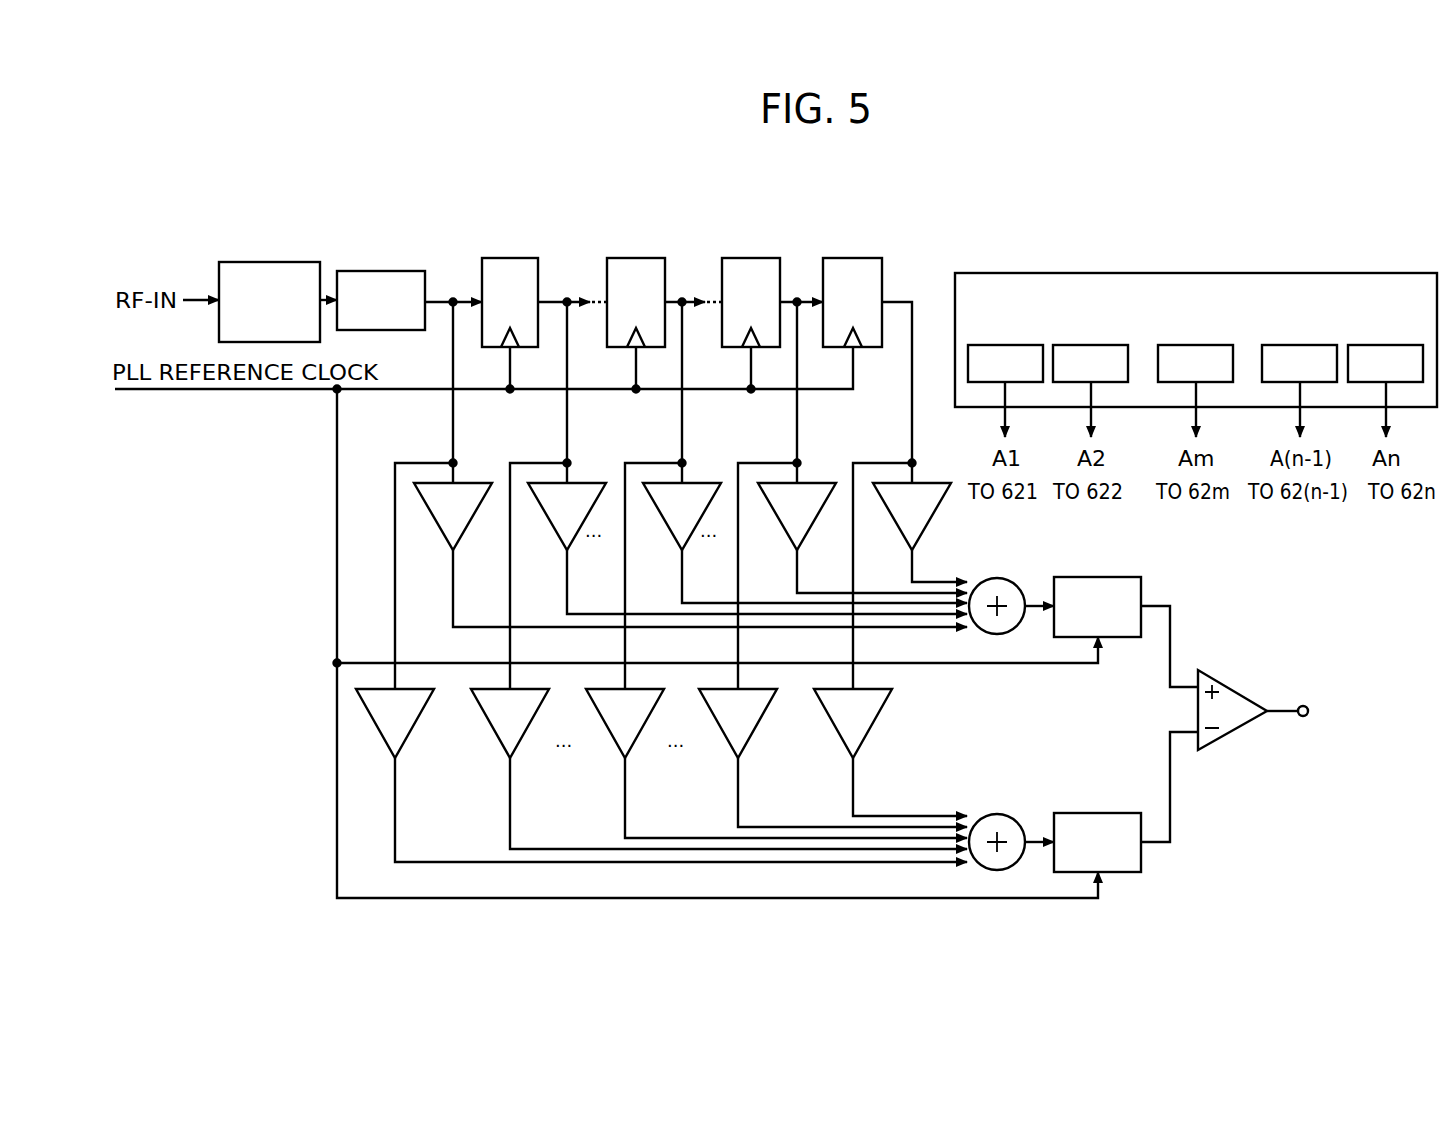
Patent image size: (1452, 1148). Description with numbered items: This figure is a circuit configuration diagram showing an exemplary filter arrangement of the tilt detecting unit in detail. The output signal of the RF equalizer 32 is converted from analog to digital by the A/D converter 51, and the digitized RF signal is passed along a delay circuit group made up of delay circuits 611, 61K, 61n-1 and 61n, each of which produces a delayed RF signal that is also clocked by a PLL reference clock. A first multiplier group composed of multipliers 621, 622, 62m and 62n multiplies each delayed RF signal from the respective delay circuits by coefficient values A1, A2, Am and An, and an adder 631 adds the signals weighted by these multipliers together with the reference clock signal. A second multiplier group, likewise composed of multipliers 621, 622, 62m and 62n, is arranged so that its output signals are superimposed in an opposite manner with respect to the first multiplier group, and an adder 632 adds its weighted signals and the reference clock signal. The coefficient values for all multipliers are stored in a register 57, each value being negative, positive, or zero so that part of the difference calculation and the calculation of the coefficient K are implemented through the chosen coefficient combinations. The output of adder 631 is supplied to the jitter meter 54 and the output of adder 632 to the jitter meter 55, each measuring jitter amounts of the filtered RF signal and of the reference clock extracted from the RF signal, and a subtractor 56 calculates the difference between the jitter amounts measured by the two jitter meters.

The RF equalizer 32 is at (263, 262).
The A/D converter 51 is at (380, 270).
The delay circuit 611 is at (510, 258).
The delay circuit 61K is at (636, 258).
The delay circuit 61n-1 is at (750, 258).
The delay circuit 61n is at (853, 258).
The register 57 is at (1195, 274).
The multiplier 621 is at (928, 482).
The multiplier 622 is at (814, 482).
The multiplier 62m is at (702, 482).
The multiplier 62n is at (474, 482).
The adder 631 is at (998, 578).
The adder 632 is at (998, 814).
The jitter meter 54 is at (1098, 577).
The jitter meter 55 is at (1098, 813).
The subtractor 56 is at (1216, 679).